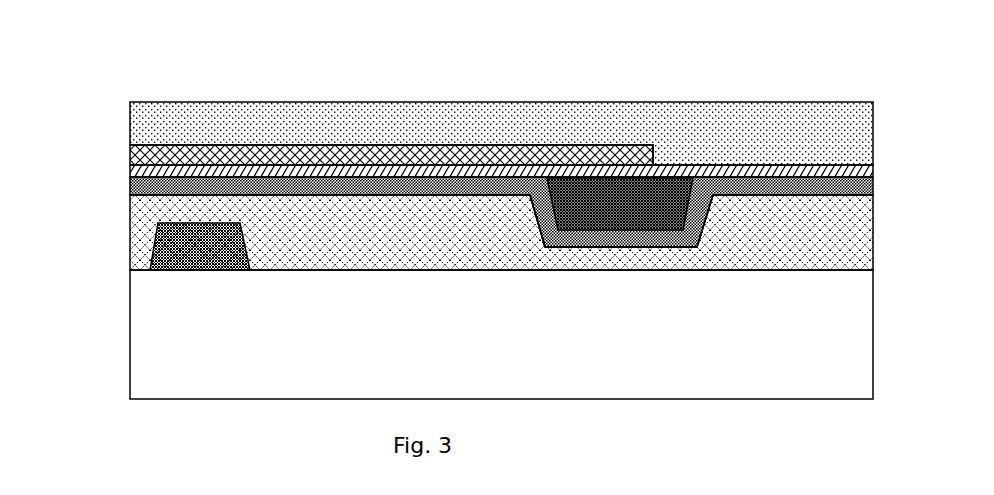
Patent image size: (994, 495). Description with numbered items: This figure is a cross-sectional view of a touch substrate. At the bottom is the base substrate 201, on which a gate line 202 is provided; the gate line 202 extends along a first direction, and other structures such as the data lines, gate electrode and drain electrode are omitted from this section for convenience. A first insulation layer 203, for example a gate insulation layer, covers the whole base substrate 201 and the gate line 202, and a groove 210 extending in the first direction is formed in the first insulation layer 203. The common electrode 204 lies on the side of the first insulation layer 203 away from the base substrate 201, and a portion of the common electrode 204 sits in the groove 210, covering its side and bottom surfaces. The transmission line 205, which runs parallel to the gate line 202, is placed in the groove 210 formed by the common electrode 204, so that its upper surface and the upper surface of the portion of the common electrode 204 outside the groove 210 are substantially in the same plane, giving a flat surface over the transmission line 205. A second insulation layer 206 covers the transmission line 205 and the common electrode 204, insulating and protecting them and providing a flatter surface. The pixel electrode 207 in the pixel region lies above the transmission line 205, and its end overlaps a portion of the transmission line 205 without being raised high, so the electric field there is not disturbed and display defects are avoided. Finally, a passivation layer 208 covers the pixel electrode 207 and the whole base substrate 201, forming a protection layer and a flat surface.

The base substrate 201 is at (138, 327).
The gate line 202 is at (148, 258).
The first insulation layer 203 is at (132, 212).
The common electrode 204 is at (130, 185).
The transmission line 205 is at (675, 193).
The second insulation layer 206 is at (130, 167).
The pixel electrode 207 is at (530, 155).
The passivation layer 208 is at (290, 103).
The groove 210 is at (706, 223).